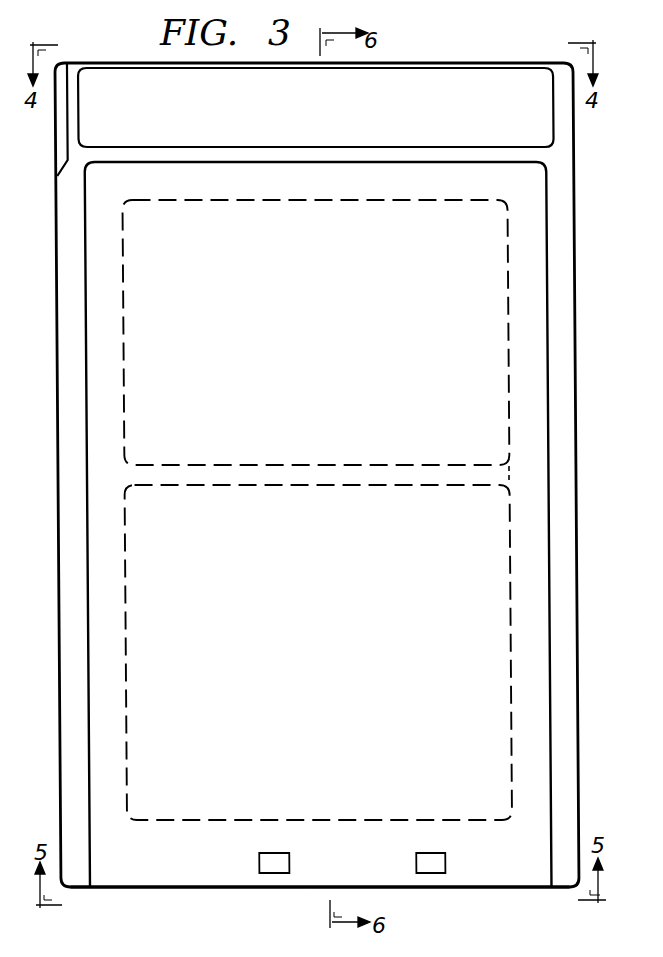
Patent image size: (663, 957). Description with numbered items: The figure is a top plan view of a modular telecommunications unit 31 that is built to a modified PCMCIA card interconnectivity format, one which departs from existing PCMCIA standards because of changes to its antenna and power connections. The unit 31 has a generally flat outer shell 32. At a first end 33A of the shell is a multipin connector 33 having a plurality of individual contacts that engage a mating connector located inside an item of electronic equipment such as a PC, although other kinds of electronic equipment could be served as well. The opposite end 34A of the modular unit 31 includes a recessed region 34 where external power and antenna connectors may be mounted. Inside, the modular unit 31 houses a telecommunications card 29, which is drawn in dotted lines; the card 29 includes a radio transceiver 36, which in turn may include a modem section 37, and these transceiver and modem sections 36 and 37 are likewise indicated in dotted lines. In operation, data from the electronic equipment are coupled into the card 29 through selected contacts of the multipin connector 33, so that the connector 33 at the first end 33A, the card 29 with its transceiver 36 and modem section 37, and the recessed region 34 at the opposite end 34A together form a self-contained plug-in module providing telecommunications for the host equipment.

The telecommunications card 29 is at (510, 474).
The modular telecommunications unit 31 is at (598, 684).
The outer shell 32 is at (189, 866).
The multipin connector 33 is at (128, 62).
The first end 33A is at (486, 62).
The recessed region 34 is at (500, 888).
The opposite end 34A is at (218, 880).
The radio transceiver 36 is at (330, 651).
The modem section 37 is at (328, 337).